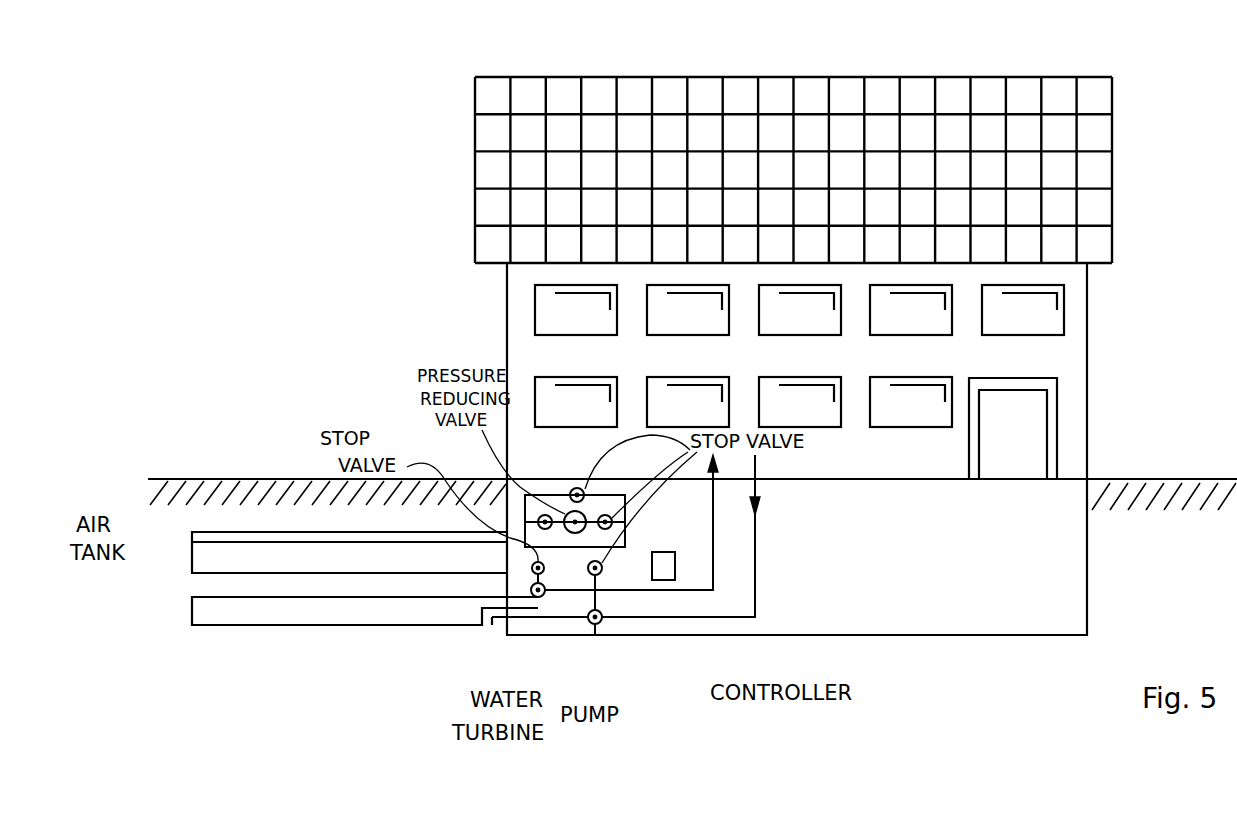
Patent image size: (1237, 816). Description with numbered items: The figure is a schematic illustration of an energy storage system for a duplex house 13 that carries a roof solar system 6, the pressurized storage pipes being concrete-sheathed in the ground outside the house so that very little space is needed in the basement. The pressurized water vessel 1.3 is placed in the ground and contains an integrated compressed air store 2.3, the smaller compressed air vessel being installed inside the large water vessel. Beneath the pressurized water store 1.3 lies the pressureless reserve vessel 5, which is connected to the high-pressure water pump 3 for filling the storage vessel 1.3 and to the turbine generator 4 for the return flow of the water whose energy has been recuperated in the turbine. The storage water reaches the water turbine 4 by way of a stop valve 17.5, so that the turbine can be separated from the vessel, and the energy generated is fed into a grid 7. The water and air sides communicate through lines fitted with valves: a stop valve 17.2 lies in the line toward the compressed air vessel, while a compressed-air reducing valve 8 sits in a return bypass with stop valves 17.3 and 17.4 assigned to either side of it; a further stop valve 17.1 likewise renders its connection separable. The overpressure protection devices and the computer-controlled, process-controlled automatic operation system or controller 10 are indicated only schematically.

The pressurized water vessel 1.3 is at (203, 569).
The compressed air vessel 2.3 is at (192, 534).
The high-pressure water pump 3 is at (593, 625).
The water turbine 4 is at (537, 598).
The pressureless reserve vessel 5 is at (256, 612).
The roof solar system 6 is at (1100, 180).
The grid 7 is at (713, 545).
The compressed-air reducing valve 8 is at (568, 514).
The automatic operation system 10 is at (665, 572).
The duplex house 13 is at (1072, 364).
The stop valve 17.1 is at (601, 563).
The stop valve 17.2 is at (580, 488).
The stop valve 17.3 is at (540, 516).
The stop valve 17.4 is at (610, 516).
The stop valve 17.5 is at (531, 568).